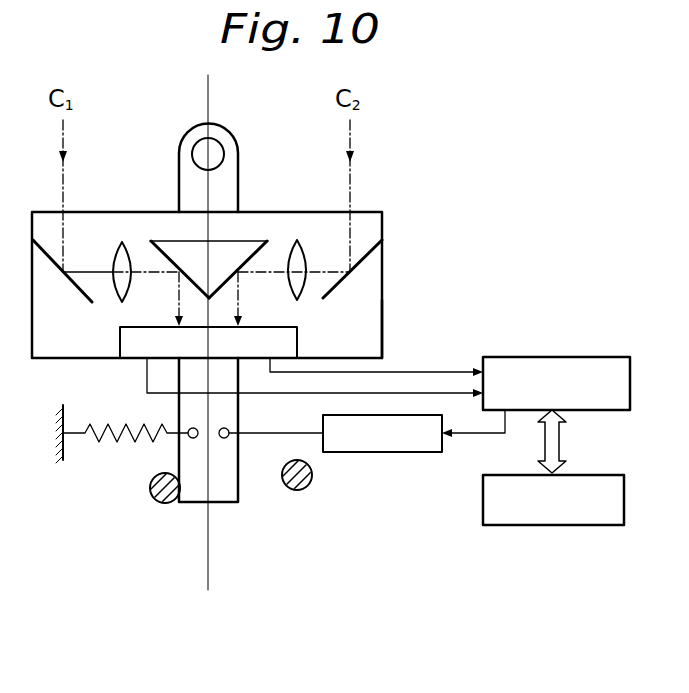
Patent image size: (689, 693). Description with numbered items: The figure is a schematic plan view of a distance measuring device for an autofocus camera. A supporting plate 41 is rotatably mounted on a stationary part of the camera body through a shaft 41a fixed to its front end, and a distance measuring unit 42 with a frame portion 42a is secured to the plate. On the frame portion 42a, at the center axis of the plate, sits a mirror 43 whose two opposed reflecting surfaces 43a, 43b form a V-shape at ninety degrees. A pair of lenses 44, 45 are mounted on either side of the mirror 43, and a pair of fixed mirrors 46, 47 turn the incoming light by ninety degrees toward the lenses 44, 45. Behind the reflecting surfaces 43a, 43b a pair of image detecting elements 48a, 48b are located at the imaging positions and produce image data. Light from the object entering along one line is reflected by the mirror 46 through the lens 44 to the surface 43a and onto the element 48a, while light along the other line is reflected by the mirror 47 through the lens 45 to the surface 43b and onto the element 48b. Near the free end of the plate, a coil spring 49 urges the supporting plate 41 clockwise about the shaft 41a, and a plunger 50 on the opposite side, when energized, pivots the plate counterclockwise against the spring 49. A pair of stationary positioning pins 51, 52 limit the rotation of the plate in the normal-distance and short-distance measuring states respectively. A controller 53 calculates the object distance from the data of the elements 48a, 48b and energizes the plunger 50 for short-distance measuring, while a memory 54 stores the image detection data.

The supporting plate 41 is at (188, 190).
The shaft 41a is at (216, 146).
The distance measuring unit 42 is at (410, 226).
The frame portion 42a is at (366, 338).
The mirror 43 is at (214, 229).
The reflecting surface 43a is at (155, 255).
The reflecting surface 43b is at (260, 258).
The lens 44 is at (126, 288).
The lens 45 is at (291, 284).
The mirror 46 is at (48, 254).
The mirror 47 is at (368, 238).
The image detecting element 48a is at (142, 345).
The image detecting element 48b is at (288, 342).
The coil spring 49 is at (118, 448).
The plunger 50 is at (427, 452).
The stationary positioning pin 51 is at (150, 494).
The stationary positioning pin 52 is at (301, 491).
The controller 53 is at (564, 360).
The memory 54 is at (588, 477).